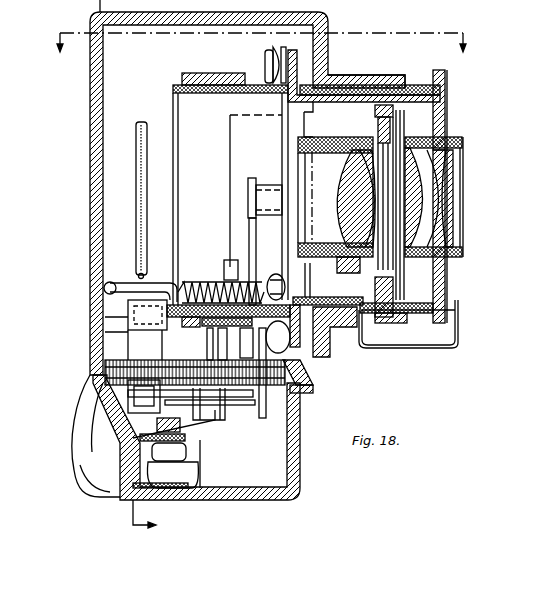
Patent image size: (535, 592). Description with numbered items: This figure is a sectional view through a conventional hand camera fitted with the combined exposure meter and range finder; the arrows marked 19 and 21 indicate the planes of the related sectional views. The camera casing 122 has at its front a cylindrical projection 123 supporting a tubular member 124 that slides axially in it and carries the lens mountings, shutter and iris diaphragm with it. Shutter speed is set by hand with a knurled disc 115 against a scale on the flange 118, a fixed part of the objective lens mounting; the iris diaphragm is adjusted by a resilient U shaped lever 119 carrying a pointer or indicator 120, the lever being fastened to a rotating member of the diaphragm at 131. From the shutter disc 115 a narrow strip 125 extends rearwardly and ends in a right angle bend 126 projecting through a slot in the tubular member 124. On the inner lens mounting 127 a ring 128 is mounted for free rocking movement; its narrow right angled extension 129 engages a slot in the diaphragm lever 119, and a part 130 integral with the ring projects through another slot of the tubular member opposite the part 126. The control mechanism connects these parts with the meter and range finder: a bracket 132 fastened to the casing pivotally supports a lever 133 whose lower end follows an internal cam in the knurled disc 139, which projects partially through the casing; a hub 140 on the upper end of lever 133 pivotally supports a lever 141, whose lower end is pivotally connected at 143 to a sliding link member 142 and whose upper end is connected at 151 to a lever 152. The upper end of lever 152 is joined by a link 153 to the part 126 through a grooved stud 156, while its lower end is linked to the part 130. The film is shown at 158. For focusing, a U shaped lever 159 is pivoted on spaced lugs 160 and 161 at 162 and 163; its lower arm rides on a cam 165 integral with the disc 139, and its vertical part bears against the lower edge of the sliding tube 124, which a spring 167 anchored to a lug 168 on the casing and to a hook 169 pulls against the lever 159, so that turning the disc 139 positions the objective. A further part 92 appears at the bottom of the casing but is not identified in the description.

The section line 21- 21 is at (260, 26).
The section line 19- 19 is at (154, 517).
The camera casing 122 is at (330, 27).
The link 153 is at (263, 41).
The grooved stud 156 is at (264, 62).
The right angle bend 126 is at (300, 78).
The cylindrical projection 123 is at (358, 76).
The tubular member 124 is at (413, 84).
The knurled disc 115 is at (447, 77).
The flange 118 is at (447, 98).
The narrow strip 125 is at (313, 104).
The inner lens mounting 127 is at (375, 135).
The ring 128 is at (306, 113).
The fastening point 131 is at (336, 150).
The lever 152 is at (282, 153).
The pivotal connection 151 is at (248, 192).
The lever 141 is at (249, 222).
The hub 140 is at (235, 260).
The hook 169 is at (276, 274).
The spring 167 is at (212, 280).
The film 158 is at (147, 145).
The lug 168 is at (112, 281).
The pivot 162 is at (150, 302).
The lug 160 is at (118, 318).
The U shaped lever 159 is at (135, 343).
The bracket 132 is at (215, 338).
The lever 133 is at (218, 356).
The lug 161 is at (118, 397).
The pivot 163 is at (150, 403).
The cam 165 is at (245, 402).
The sliding link member 142 is at (263, 398).
The cup 92 is at (200, 470).
The part 130 is at (305, 345).
The knurled disc 139 is at (315, 372).
The pivotal connection 143 is at (300, 388).
The right angled extension 129 is at (325, 306).
The pointer or indicator 120 is at (460, 310).
The diaphragm lever 119 is at (405, 340).